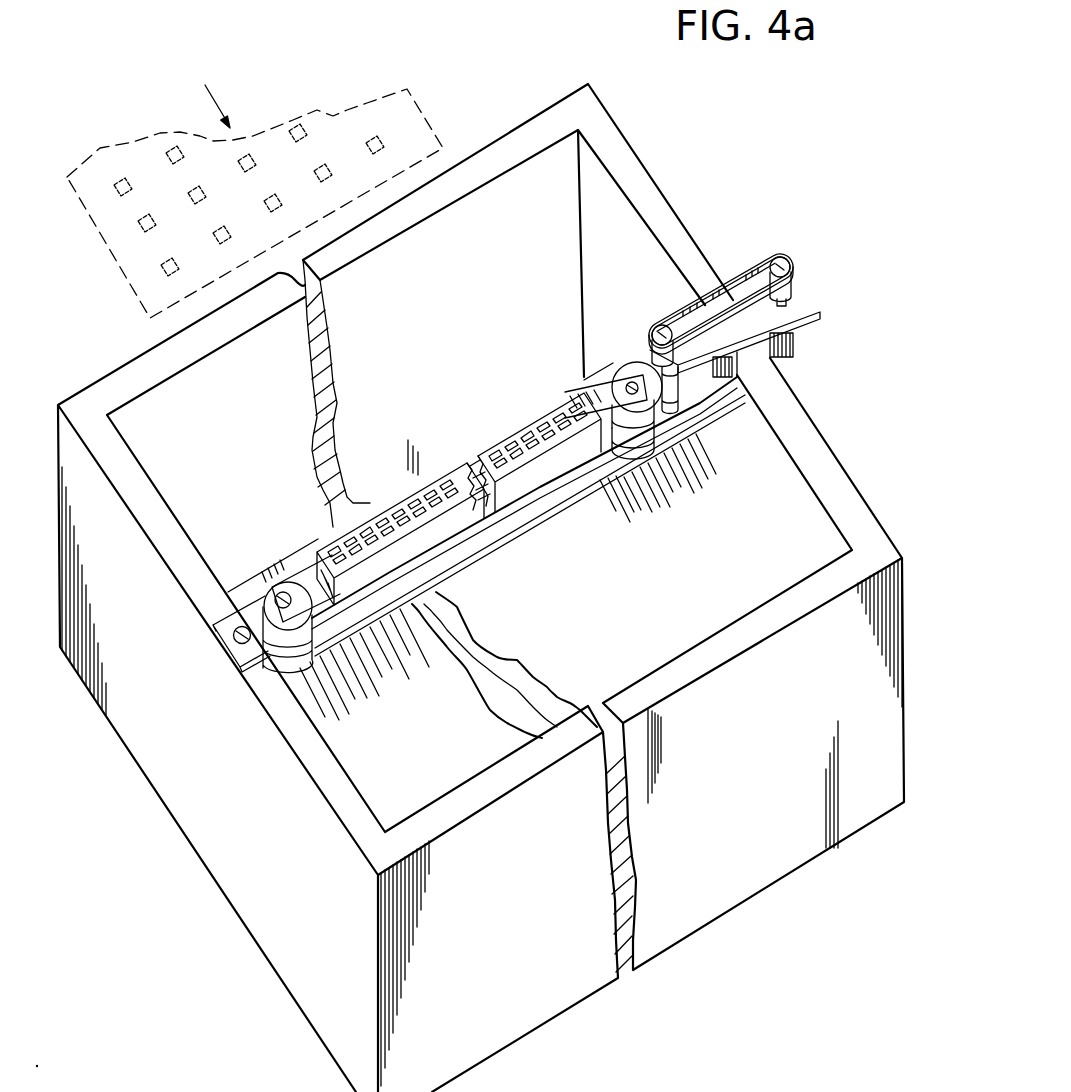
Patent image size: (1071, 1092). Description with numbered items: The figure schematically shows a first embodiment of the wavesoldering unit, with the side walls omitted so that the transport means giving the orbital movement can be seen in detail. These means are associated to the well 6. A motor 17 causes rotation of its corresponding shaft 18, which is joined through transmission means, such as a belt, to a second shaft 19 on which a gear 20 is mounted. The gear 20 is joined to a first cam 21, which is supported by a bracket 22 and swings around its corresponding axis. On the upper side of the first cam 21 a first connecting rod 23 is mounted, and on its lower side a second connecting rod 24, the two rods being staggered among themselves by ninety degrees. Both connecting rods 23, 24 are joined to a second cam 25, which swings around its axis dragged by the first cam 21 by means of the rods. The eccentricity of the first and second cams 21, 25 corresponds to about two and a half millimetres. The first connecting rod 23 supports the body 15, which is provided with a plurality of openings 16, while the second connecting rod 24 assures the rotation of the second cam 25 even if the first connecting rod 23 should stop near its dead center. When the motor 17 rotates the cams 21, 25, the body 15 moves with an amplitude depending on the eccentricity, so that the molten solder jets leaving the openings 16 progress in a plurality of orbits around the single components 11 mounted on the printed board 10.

The well 6 is at (828, 848).
The printed board 10 is at (145, 297).
The single components 11 is at (135, 223).
The body 15 is at (460, 520).
The openings 16 is at (481, 458).
The motor 17 is at (800, 340).
The shaft 18 is at (786, 262).
The second shaft 19 is at (654, 329).
The gear 20 is at (670, 386).
The first cam 21 is at (615, 378).
The bracket 22 is at (678, 425).
The first connecting rod 23 is at (312, 582).
The second connecting rod 24 is at (530, 520).
The second cam 25 is at (257, 610).